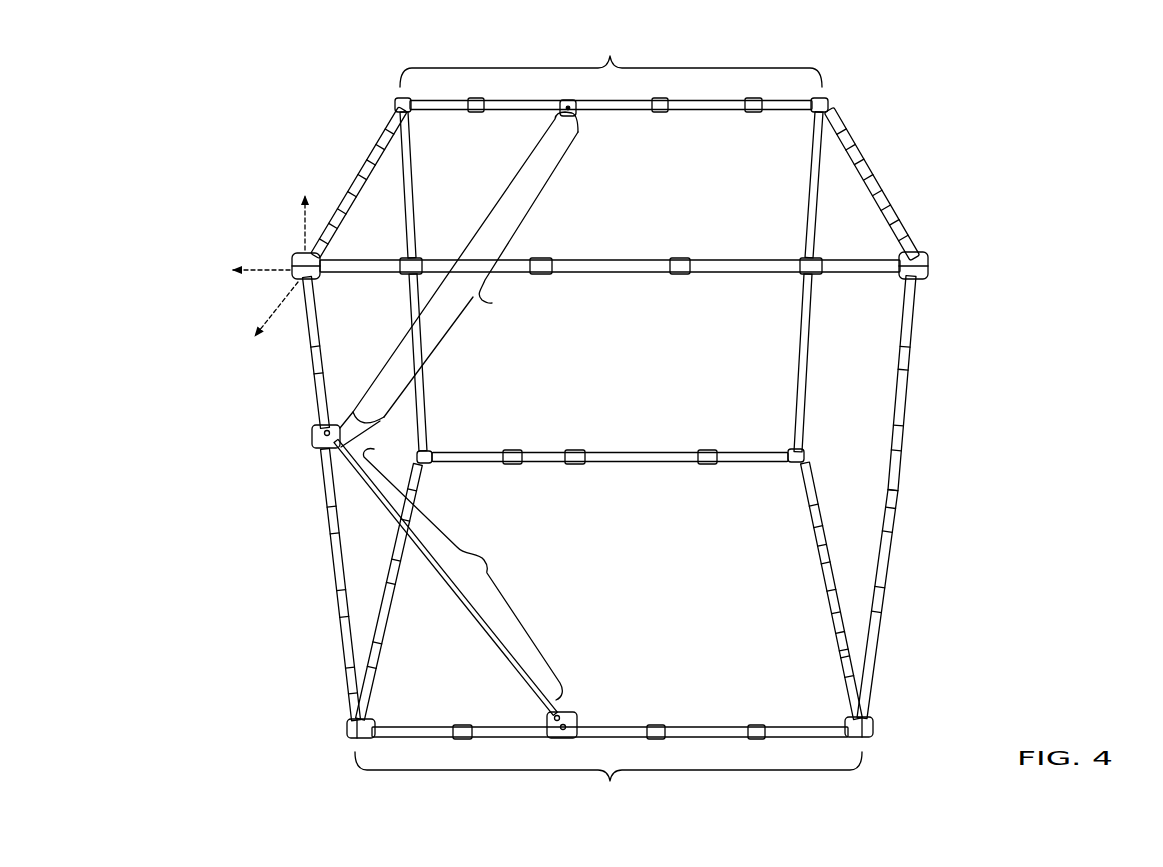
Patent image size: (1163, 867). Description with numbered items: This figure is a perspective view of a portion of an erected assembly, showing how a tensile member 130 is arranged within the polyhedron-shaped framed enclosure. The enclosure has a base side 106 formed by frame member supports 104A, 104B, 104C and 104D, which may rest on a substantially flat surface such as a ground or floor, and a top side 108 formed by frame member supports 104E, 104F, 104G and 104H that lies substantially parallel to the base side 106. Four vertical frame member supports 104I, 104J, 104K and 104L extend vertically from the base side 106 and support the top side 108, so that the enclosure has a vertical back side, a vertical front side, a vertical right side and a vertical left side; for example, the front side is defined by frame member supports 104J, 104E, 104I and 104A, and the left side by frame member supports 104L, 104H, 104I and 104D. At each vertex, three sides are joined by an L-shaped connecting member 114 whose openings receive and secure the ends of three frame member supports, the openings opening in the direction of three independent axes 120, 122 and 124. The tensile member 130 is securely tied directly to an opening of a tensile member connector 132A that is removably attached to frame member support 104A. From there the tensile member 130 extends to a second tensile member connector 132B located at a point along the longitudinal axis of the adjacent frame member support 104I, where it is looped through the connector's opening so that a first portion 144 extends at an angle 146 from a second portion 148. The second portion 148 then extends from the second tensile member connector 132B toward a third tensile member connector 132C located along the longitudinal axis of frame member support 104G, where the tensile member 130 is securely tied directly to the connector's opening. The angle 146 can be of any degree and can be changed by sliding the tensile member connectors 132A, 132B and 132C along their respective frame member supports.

The frame member support 104A is at (793, 722).
The frame member support 104B is at (822, 580).
The frame member support 104C is at (638, 465).
The frame member support 104D is at (389, 641).
The frame member support 104E is at (866, 269).
The frame member support 104F is at (889, 197).
The frame member support 104G is at (722, 112).
The frame member support 104H is at (362, 141).
The frame member support 104I is at (330, 580).
The frame member support 104J is at (886, 560).
The frame member support 104K is at (798, 329).
The frame member support 104L is at (438, 412).
The base side 106 is at (608, 786).
The top side 108 is at (611, 56).
The connecting member 114 is at (348, 742).
The axis 120 is at (265, 327).
The axis 122 is at (242, 274).
The axis 124 is at (306, 206).
The tensile member 130 is at (456, 413).
The tensile member connector 132A is at (597, 673).
The second tensile member connector 132B is at (300, 452).
The third tensile member connector 132C is at (578, 117).
The first portion 144 is at (448, 577).
The angle 146 is at (362, 433).
The second portion 148 is at (465, 267).